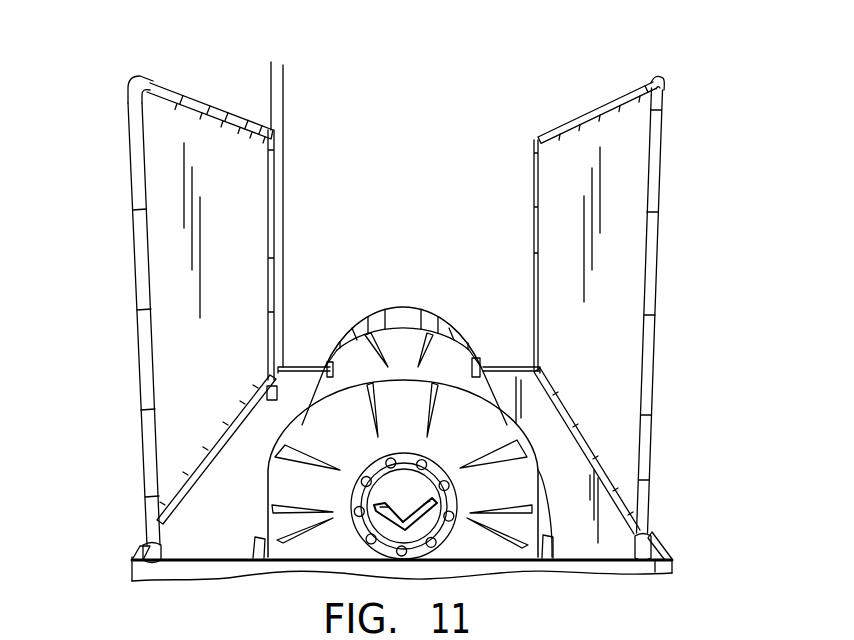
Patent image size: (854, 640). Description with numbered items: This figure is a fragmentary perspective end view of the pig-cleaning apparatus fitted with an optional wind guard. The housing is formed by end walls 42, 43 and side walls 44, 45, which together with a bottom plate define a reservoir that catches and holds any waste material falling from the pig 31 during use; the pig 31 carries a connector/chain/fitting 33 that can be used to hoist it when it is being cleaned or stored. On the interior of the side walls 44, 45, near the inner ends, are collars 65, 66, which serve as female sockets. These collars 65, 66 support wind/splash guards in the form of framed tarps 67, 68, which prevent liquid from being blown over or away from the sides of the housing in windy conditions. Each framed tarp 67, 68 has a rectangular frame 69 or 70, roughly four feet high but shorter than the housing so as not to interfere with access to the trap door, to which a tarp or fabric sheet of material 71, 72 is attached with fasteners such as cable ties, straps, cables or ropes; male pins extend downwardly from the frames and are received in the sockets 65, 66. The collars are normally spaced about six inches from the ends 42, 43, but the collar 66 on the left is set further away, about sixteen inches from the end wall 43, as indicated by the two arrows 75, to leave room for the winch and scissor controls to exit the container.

The pig 31 is at (395, 308).
The connector/chain/fitting 33 is at (413, 522).
The end wall 42 is at (237, 570).
The end wall 43 is at (303, 378).
The side wall 44 is at (660, 545).
The side wall 45 is at (140, 553).
The collar 65 is at (152, 553).
The collar 66 is at (270, 400).
The framed tarp 67 is at (218, 360).
The framed tarp 68 is at (606, 342).
The rectangular frame 69 is at (193, 107).
The rectangular frame 70 is at (663, 82).
The tarp or fabric or other sheet of material 71 is at (160, 168).
The tarp or fabric or other sheet of material 72 is at (633, 125).
The arrows 75 is at (261, 55).